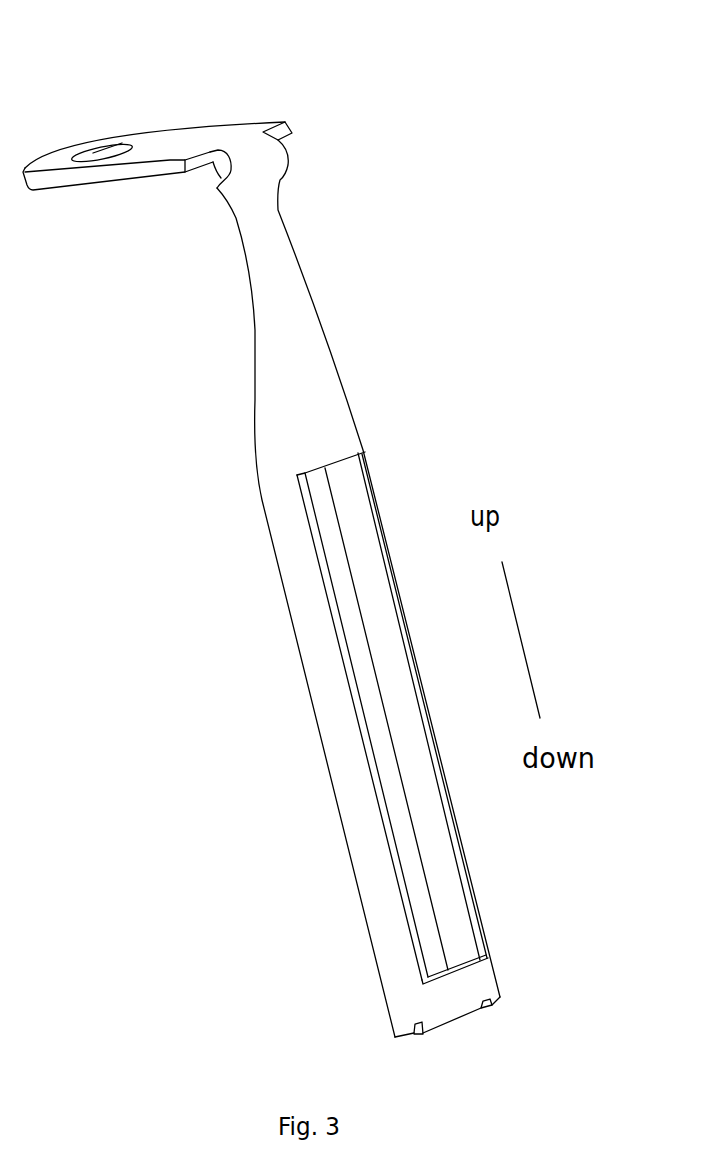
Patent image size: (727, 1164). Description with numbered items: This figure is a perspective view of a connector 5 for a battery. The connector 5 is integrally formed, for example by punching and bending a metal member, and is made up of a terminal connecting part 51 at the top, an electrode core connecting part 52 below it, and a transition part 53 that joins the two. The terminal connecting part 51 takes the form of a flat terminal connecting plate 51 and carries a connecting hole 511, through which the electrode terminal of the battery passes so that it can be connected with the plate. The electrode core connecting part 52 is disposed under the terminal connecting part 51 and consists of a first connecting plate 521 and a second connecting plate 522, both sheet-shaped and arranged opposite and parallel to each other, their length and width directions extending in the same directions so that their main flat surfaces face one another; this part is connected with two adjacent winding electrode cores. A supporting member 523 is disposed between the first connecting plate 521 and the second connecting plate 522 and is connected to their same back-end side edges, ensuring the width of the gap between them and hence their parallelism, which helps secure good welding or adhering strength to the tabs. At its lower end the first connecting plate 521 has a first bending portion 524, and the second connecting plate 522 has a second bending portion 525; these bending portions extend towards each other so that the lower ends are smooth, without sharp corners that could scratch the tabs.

The connector 5 is at (88, 38).
The terminal connecting part 51 is at (161, 170).
The connecting hole 511 is at (110, 145).
The electrode core connecting part 52 is at (183, 742).
The first connecting plate 521 is at (332, 692).
The second connecting plate 522 is at (415, 748).
The supporting member 523 is at (463, 988).
The first bending portion 524 is at (393, 1035).
The second bending portion 525 is at (487, 1007).
The transition part 53 is at (273, 252).